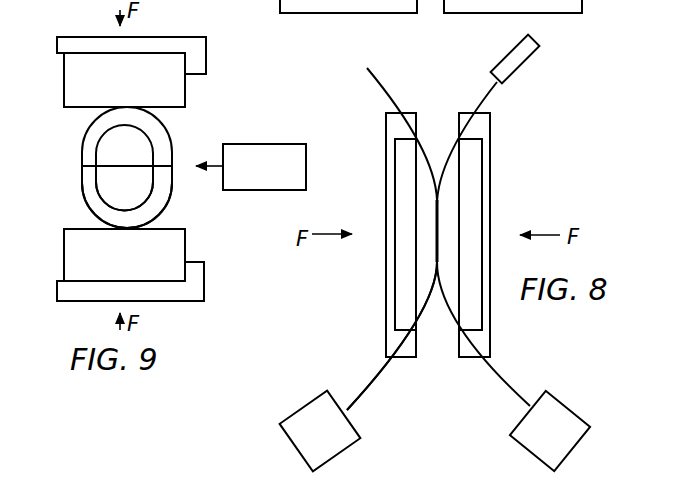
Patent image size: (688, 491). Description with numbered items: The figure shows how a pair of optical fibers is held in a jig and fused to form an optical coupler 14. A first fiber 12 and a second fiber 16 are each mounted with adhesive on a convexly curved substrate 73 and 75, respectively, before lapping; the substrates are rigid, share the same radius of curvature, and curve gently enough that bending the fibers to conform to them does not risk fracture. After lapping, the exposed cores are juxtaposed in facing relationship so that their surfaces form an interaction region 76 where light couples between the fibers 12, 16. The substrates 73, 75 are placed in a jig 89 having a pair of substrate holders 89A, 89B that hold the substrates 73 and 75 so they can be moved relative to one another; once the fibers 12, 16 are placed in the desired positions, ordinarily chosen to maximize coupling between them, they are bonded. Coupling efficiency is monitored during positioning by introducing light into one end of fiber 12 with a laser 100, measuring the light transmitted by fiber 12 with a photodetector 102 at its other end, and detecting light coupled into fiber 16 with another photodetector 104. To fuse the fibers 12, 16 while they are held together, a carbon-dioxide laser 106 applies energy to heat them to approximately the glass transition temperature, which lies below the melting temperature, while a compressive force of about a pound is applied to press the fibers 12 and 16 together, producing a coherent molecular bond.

In FIG. 9, the optical fiber 12 is at (190, 130).
In FIG. 8, the optical fiber 12 is at (487, 95).
In FIG. 8, the coupler 14 is at (429, 370).
In FIG. 9, the optical fiber 16 is at (184, 205).
In FIG. 8, the optical fiber 16 is at (375, 78).
In FIG. 9, the convexly curved substrate 73 is at (64, 80).
In FIG. 8, the convexly curved substrate 73 is at (463, 188).
In FIG. 9, the convexly curved substrate 75 is at (64, 251).
In FIG. 8, the convexly curved substrate 75 is at (413, 242).
In FIG. 9, the interaction region 76 is at (106, 180).
In FIG. 8, the jig 89 is at (440, 105).
In FIG. 9, the substrate holder 89A is at (206, 55).
In FIG. 8, the substrate holder 89A is at (487, 193).
In FIG. 9, the substrate holder 89B is at (204, 290).
In FIG. 8, the substrate holder 89B is at (386, 322).
In FIG. 8, the laser 100 is at (522, 67).
In FIG. 8, the photodetector 102 is at (566, 406).
In FIG. 8, the photodetector 104 is at (297, 410).
In FIG. 9, the CO2 laser 106 is at (256, 144).